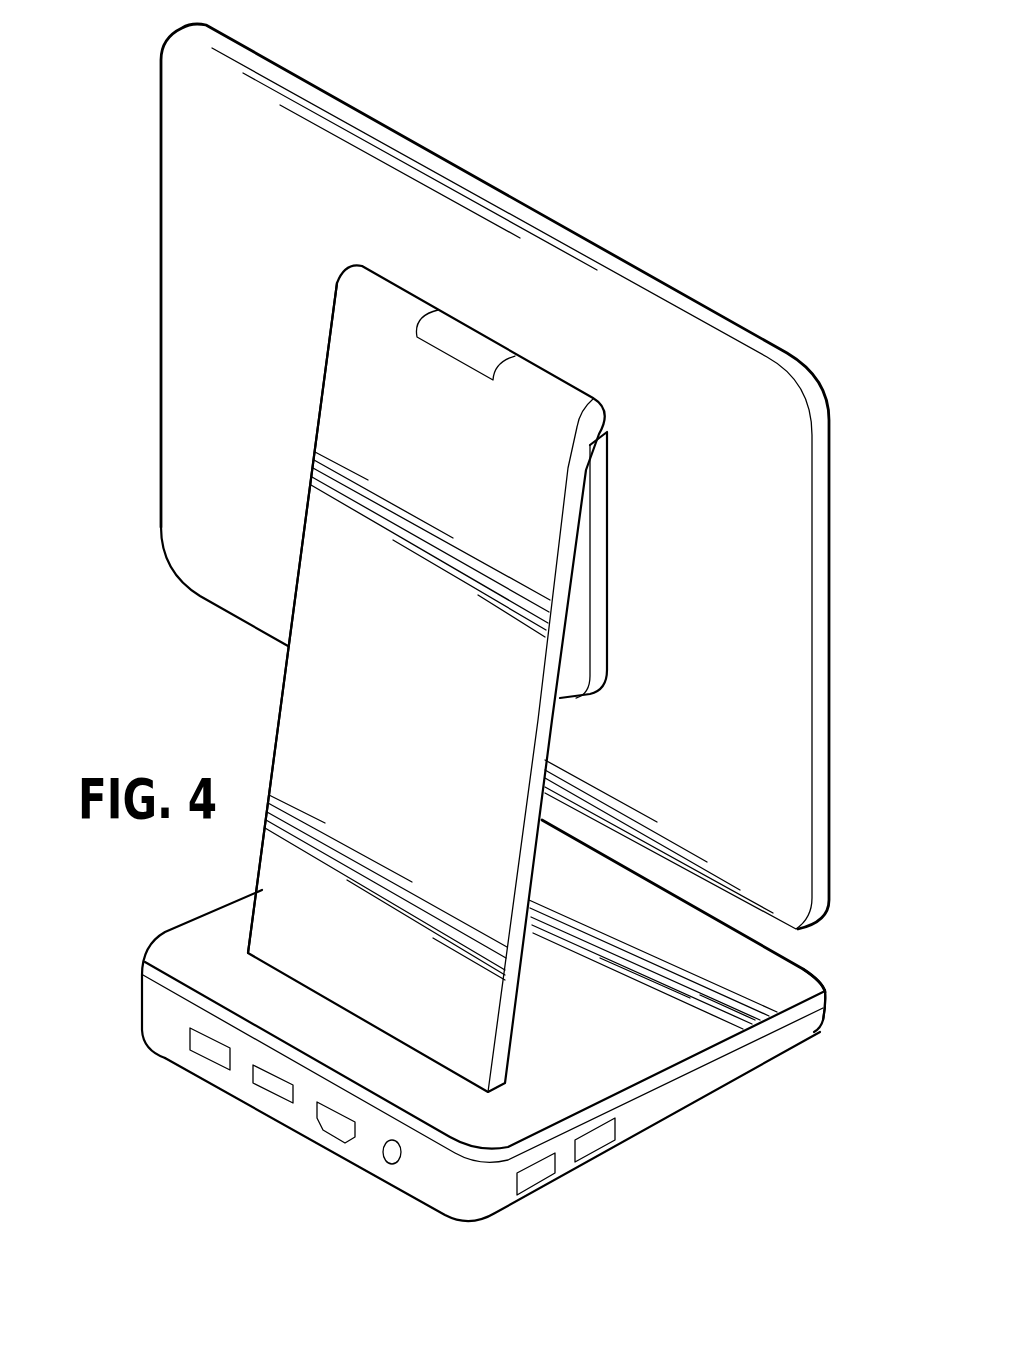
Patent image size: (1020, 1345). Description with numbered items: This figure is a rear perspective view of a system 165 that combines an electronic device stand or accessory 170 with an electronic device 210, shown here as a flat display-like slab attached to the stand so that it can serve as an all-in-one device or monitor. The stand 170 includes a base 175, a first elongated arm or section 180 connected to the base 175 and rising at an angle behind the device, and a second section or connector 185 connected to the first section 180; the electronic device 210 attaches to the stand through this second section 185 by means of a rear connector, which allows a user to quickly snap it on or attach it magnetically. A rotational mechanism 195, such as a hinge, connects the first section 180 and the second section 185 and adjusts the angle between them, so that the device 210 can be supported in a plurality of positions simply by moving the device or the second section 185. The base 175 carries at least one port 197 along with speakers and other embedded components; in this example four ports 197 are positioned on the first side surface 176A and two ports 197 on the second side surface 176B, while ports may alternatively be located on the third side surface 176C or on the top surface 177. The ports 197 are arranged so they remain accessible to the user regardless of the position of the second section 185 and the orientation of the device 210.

The system 165 is at (495, 476).
The electronic device 210 is at (606, 229).
The electronic device stand 170 is at (444, 639).
The rotational mechanism 195 is at (486, 333).
The second section 185 is at (612, 578).
The first elongated arm 180 is at (280, 718).
The base 175 is at (468, 1021).
The top surface 177 is at (824, 990).
The first side surface 176A is at (305, 1108).
The second side surface 176B is at (672, 1100).
The third side surface 176C is at (141, 1000).
The port 197 is at (212, 1050).